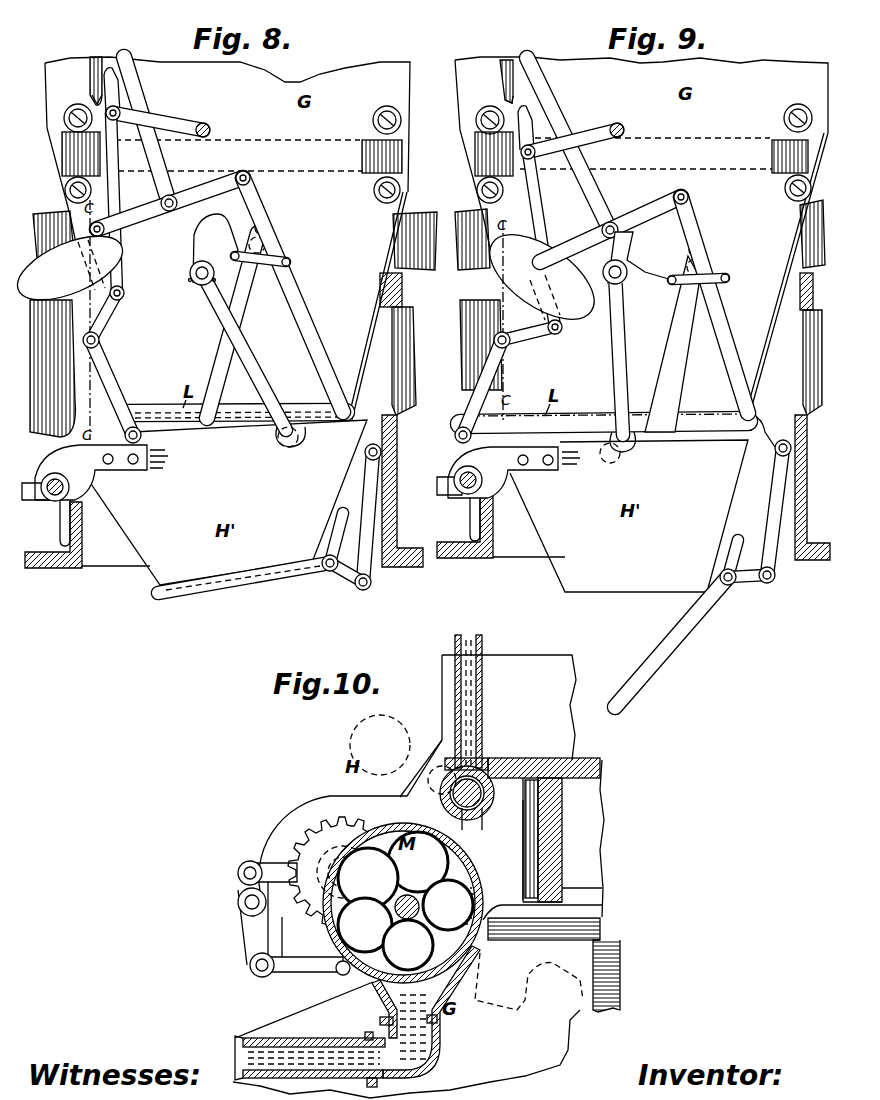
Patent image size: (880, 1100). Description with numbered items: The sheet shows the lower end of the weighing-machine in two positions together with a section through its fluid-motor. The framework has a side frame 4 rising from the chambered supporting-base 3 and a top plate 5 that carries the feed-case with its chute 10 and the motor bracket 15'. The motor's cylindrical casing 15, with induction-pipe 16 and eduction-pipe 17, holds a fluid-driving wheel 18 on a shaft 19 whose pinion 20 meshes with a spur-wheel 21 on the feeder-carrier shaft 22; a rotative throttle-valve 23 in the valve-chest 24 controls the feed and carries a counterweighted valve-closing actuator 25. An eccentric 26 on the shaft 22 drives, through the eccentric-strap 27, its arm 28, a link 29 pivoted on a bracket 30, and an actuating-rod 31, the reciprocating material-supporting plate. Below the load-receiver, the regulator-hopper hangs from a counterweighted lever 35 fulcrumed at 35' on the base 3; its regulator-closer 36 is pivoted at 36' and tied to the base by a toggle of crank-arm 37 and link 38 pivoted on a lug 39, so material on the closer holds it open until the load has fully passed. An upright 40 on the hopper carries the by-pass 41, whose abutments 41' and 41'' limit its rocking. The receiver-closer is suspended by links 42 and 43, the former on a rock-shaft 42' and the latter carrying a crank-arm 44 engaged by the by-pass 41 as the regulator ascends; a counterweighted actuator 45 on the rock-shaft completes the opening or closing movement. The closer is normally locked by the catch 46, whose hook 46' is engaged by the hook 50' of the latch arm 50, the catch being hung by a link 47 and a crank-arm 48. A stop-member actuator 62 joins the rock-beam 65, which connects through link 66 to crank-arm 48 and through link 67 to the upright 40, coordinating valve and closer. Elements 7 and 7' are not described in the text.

In FIG. 8, the chambered supporting-base 3 is at (395, 452).
In FIG. 9, the chambered supporting-base 3 is at (803, 490).
In FIG. 10, the side frame or column 4 is at (577, 948).
In FIG. 10, the top plate 5 is at (520, 757).
In FIG. 8, the guide block 7 is at (54, 232).
In FIG. 9, the guide block 7 is at (472, 232).
In FIG. 8, the guide block 7' is at (415, 231).
In FIG. 9, the guide block 7' is at (814, 229).
In FIG. 10, the chute 10 is at (495, 658).
In FIG. 10, the cylindrical casing 15 is at (403, 881).
In FIG. 10, the bracket 15' is at (524, 850).
In FIG. 10, the induction-pipe 16 is at (458, 702).
In FIG. 10, the eduction-pipe 17 is at (307, 1036).
In FIG. 10, the fluid-driving wheel 18 is at (392, 835).
In FIG. 10, the shaft 19 is at (401, 932).
In FIG. 10, the pinion 20 is at (364, 925).
In FIG. 10, the spur-wheel 21 is at (315, 812).
In FIG. 10, the shaft 22 is at (368, 876).
In FIG. 10, the throttle-valve 23 is at (478, 758).
In FIG. 10, the valve-chest 24 is at (488, 793).
In FIG. 10, the counterweighted valve-closing actuator 25 is at (395, 718).
In FIG. 10, the eccentric 26 is at (322, 845).
In FIG. 10, the eccentric-strap 27 is at (308, 855).
In FIG. 10, the arm 28 is at (270, 855).
In FIG. 10, the link 29 is at (250, 915).
In FIG. 10, the bracket 30 is at (245, 902).
In FIG. 10, the actuating-rod 31 is at (300, 945).
In FIG. 8, the counterweighted lever 35 is at (95, 472).
In FIG. 9, the counterweighted lever 35 is at (502, 472).
In FIG. 8, the fulcrum 35' is at (48, 500).
In FIG. 9, the fulcrum 35' is at (457, 492).
In FIG. 8, the regulator-closer 36 is at (244, 591).
In FIG. 9, the regulator-closer 36 is at (671, 642).
In FIG. 8, the pivot of regulator-closer 36' is at (321, 559).
In FIG. 9, the pivot of regulator-closer 36' is at (706, 558).
In FIG. 8, the toggle member (crank-arm) 37 is at (355, 588).
In FIG. 9, the toggle member (crank-arm) 37 is at (745, 584).
In FIG. 8, the toggle member (link) 38 is at (368, 490).
In FIG. 9, the toggle member (link) 38 is at (772, 503).
In FIG. 8, the lug or bracket 39 is at (380, 440).
In FIG. 9, the lug or bracket 39 is at (780, 440).
In FIG. 8, the upright or bracket 40 is at (296, 335).
In FIG. 9, the upright or bracket 40 is at (718, 338).
In FIG. 8, the discharge-member-actuating by-pass 41 is at (247, 307).
In FIG. 9, the discharge-member-actuating by-pass 41 is at (674, 326).
In FIG. 8, the stop abutment 41' is at (267, 246).
In FIG. 9, the stop abutment 41' is at (681, 290).
In FIG. 8, the stop abutment 41'' is at (303, 261).
In FIG. 9, the stop abutment 41'' is at (738, 269).
In FIG. 8, the discharge-member-supporting link 42 is at (119, 391).
In FIG. 9, the discharge-member-supporting link 42 is at (466, 391).
In FIG. 8, the rock-shaft 42' is at (117, 341).
In FIG. 9, the rock-shaft 42' is at (502, 340).
In FIG. 8, the discharge-member-supporting link 43 is at (265, 388).
In FIG. 9, the discharge-member-supporting link 43 is at (620, 348).
In FIG. 8, the crank-arm 44 is at (197, 242).
In FIG. 9, the crank-arm 44 is at (625, 240).
In FIG. 8, the counterweighted actuator 45 is at (70, 268).
In FIG. 9, the counterweighted actuator 45 is at (542, 277).
In FIG. 8, the catch 46 is at (147, 199).
In FIG. 9, the catch 46 is at (543, 236).
In FIG. 8, the hook 46' is at (81, 76).
In FIG. 9, the hook 46' is at (497, 110).
In FIG. 8, the link 47 is at (170, 122).
In FIG. 9, the link 47 is at (583, 130).
In FIG. 8, the crank-arm 48 is at (108, 314).
In FIG. 9, the crank-arm 48 is at (535, 335).
In FIG. 8, the latch arm 50 is at (91, 54).
In FIG. 9, the latch arm 50 is at (507, 67).
In FIG. 8, the hook 50' is at (78, 89).
In FIG. 9, the hook 50' is at (541, 82).
In FIG. 8, the stop-member actuator 62 is at (134, 92).
In FIG. 9, the stop-member actuator 62 is at (553, 118).
In FIG. 8, the link or rock-beam 65 is at (140, 212).
In FIG. 9, the link or rock-beam 65 is at (575, 240).
In FIG. 8, the link 66 is at (122, 287).
In FIG. 9, the link 66 is at (548, 320).
In FIG. 8, the link 67 is at (252, 205).
In FIG. 9, the link 67 is at (690, 215).